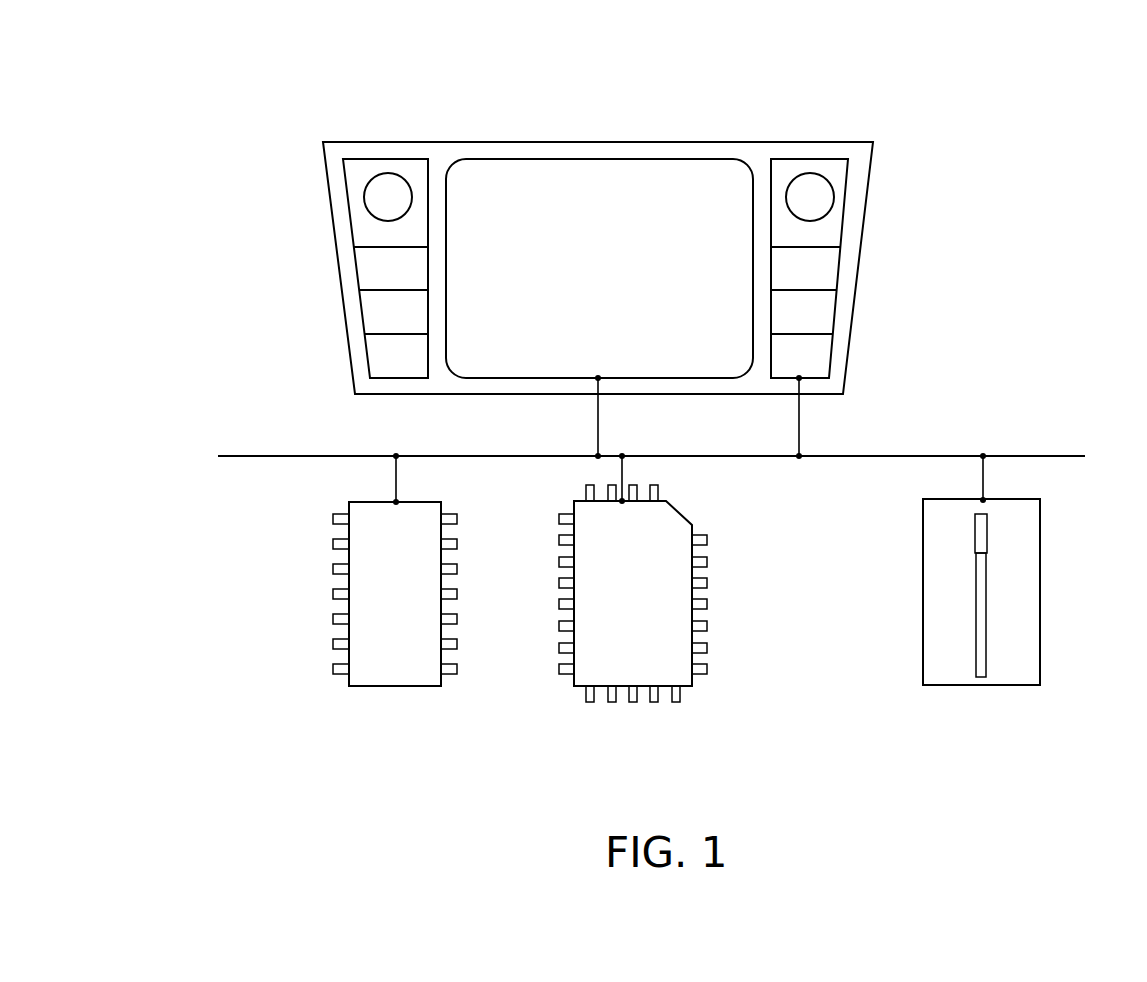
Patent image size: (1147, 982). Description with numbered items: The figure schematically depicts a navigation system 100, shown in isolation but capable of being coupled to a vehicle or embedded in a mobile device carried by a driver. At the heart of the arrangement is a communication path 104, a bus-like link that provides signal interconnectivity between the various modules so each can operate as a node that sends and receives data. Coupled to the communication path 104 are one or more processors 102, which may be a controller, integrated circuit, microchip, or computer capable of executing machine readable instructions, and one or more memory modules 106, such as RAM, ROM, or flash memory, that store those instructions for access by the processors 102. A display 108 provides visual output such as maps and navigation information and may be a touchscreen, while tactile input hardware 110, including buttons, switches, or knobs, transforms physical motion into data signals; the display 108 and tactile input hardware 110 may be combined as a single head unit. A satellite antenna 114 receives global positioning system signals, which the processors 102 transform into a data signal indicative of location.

The navigation system 100 is at (1059, 142).
The processors 102 is at (578, 687).
The communication path 104 is at (246, 455).
The memory modules 106 is at (397, 687).
The display 108 is at (587, 171).
The tactile input hardware 110 is at (352, 168).
The satellite antenna 114 is at (980, 687).